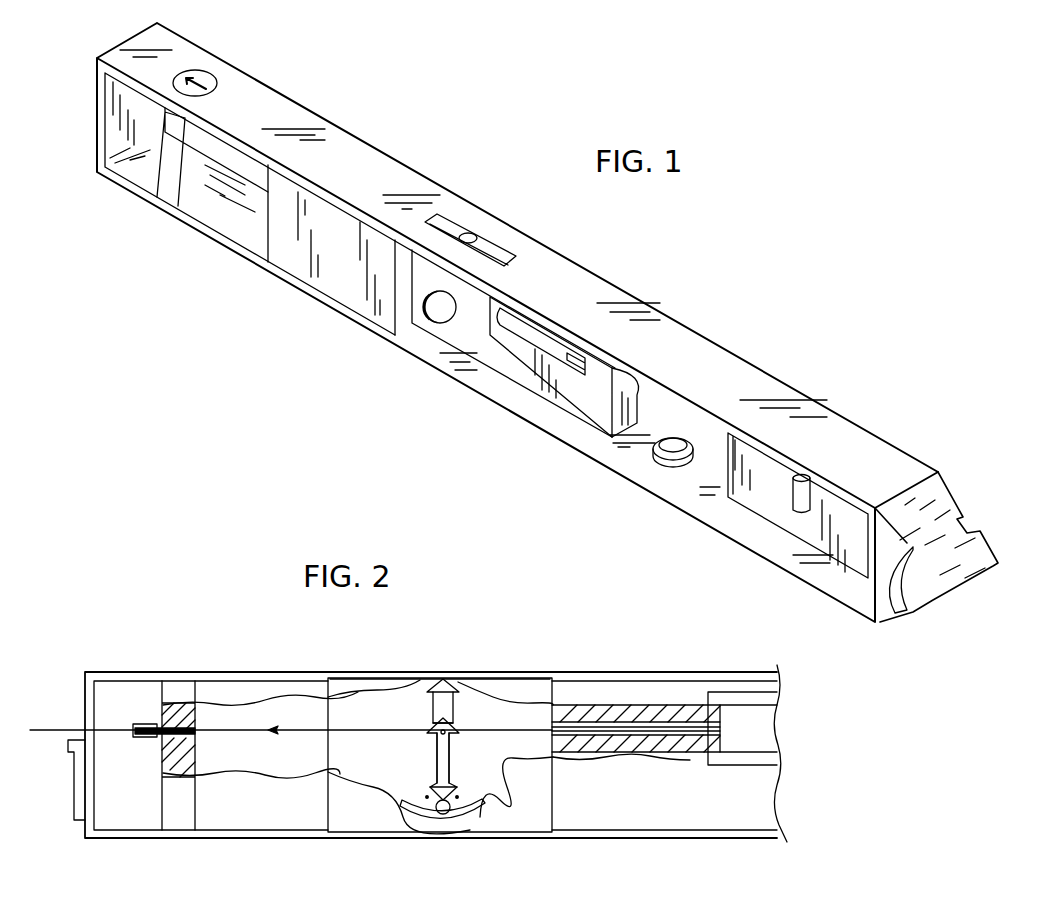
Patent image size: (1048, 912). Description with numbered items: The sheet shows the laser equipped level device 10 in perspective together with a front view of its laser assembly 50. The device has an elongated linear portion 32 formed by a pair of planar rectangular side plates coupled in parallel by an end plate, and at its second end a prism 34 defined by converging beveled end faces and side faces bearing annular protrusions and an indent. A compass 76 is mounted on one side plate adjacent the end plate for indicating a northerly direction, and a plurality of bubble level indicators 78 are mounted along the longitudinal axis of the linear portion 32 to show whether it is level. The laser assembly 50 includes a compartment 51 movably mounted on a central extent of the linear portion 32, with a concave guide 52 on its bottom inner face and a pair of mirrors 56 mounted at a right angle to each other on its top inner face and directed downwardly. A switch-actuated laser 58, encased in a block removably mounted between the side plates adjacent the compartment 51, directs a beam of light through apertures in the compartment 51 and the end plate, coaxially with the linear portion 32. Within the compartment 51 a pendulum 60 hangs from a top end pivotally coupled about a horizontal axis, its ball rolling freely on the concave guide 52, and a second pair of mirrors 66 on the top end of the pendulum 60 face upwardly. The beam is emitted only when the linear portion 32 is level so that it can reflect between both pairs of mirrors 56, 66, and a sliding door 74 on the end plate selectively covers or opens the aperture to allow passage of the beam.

In FIG. 1, the laser equipped level device 10 is at (743, 199).
In FIG. 1, the linear portion 32 is at (355, 167).
In FIG. 2, the linear portion 32 is at (648, 671).
In FIG. 1, the prism 34 is at (945, 512).
In FIG. 1, the laser assembly 50 is at (613, 343).
In FIG. 2, the laser assembly 50 is at (460, 652).
In FIG. 1, the compartment 51 is at (377, 250).
In FIG. 2, the compartment 51 is at (543, 807).
In FIG. 2, the concave guide 52 is at (472, 810).
In FIG. 2, the pair of mirrors 56 is at (434, 678).
In FIG. 1, the switch-actuated laser 58 is at (557, 340).
In FIG. 2, the pendulum 60 is at (432, 745).
In FIG. 2, the second pair of mirrors 66 is at (453, 720).
In FIG. 2, the sliding door 74 is at (78, 800).
In FIG. 1, the compass 76 is at (223, 78).
In FIG. 1, the bubble level indicators 78 is at (487, 238).